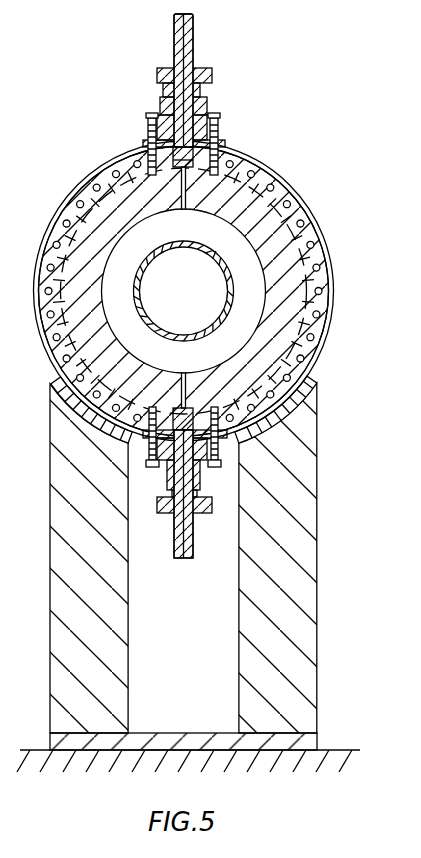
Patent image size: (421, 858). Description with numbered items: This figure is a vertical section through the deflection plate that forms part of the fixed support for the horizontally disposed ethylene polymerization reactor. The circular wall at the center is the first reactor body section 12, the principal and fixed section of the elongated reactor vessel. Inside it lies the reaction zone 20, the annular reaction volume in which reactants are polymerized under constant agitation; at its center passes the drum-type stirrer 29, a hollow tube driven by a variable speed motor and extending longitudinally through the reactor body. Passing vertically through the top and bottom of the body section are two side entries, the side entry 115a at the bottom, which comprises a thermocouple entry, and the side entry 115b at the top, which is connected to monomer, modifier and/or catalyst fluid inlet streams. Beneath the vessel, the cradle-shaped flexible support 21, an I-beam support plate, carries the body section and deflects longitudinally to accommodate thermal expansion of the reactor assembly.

The first reactor body section 12 is at (253, 215).
The reaction zone 20 is at (193, 234).
The stirrer 29 is at (222, 262).
The flexible support 21 is at (238, 653).
The side entry 115a is at (200, 516).
The side entry 115b is at (201, 92).